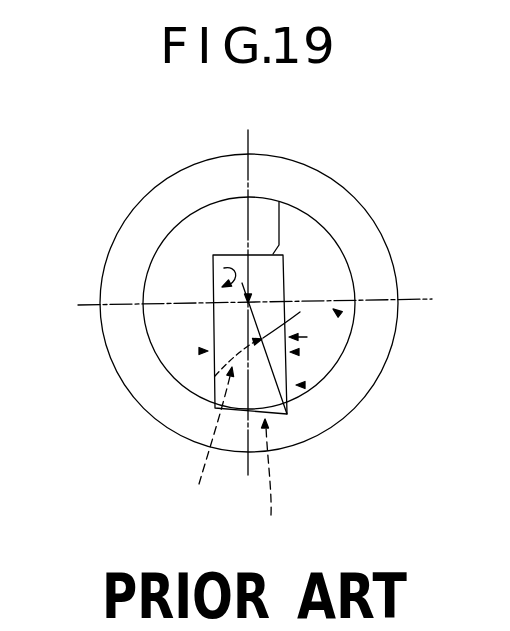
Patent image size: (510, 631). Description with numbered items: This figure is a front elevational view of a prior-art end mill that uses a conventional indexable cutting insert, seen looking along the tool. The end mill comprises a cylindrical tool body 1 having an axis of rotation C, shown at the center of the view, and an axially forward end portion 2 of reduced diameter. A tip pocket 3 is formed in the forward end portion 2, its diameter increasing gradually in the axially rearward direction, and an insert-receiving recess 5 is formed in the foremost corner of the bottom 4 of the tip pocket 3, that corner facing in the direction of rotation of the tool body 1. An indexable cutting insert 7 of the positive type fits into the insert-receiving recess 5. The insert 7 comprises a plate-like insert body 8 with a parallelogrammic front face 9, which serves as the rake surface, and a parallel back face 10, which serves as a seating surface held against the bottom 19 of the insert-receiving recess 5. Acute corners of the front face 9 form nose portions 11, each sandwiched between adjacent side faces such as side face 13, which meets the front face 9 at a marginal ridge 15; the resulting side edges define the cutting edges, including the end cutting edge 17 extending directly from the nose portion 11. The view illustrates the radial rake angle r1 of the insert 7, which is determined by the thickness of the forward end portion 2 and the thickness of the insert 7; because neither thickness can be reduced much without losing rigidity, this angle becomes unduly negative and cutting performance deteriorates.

The tool body 1 is at (389, 247).
The forward end portion 2 is at (166, 234).
The tip pocket 3 is at (335, 310).
The bottom 4 is at (283, 223).
The insert-receiving recess 5 is at (212, 445).
The indexable cutting insert 7 is at (273, 487).
The insert body 8 is at (215, 376).
The front face 9 is at (296, 351).
The back face 10 is at (200, 351).
The nose portion 11 is at (288, 416).
The side face 13 is at (218, 321).
The marginal ridge 15 is at (289, 370).
The end cutting edge 17 is at (299, 386).
The bottom 19 is at (212, 272).
The axis of rotation C is at (251, 302).
The radial rake angle r1 is at (299, 320).